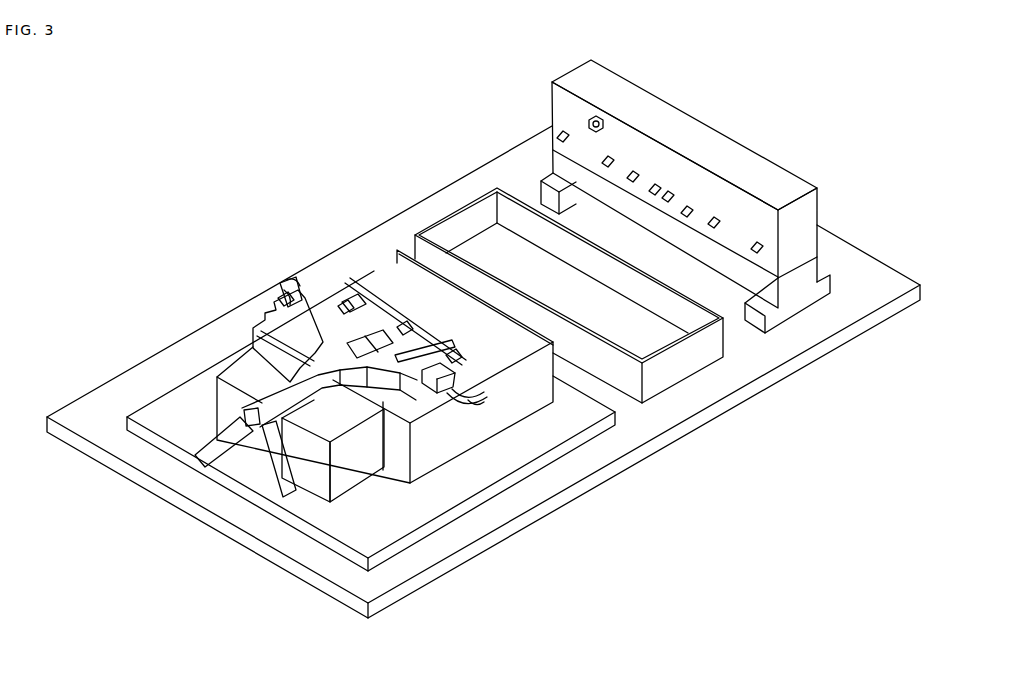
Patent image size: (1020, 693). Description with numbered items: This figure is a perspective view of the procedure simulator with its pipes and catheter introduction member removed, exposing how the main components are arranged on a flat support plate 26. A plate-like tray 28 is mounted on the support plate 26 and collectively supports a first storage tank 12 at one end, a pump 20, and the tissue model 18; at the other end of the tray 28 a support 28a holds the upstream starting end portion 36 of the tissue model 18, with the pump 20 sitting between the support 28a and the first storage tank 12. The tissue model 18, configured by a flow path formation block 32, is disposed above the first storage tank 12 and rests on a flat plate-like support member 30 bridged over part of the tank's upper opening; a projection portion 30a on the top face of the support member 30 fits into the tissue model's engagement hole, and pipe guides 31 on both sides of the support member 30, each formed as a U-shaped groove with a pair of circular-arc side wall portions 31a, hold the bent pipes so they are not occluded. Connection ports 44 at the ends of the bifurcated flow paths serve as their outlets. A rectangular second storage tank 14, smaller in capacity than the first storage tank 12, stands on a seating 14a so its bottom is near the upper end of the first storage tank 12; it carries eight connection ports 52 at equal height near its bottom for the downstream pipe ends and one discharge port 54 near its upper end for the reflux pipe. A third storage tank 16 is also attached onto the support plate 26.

The first storage tank 12 is at (588, 344).
The second storage tank 14 is at (567, 74).
The seating 14a is at (812, 300).
The third storage tank 16 is at (478, 193).
The tissue model 18 is at (293, 350).
The pump 20 is at (236, 374).
The support plate 26 is at (604, 477).
The tray 28 is at (548, 500).
The support 28a is at (217, 455).
The support member 30 is at (262, 320).
The projection portion 30a is at (390, 323).
The pipe guide 31 is at (275, 287).
The side wall portion 31a is at (293, 280).
The flow path formation block 32 is at (334, 386).
The starting end portion 36 is at (244, 419).
The connection port 44 is at (303, 300).
The connection port 52 is at (654, 196).
The discharge port 54 is at (602, 117).